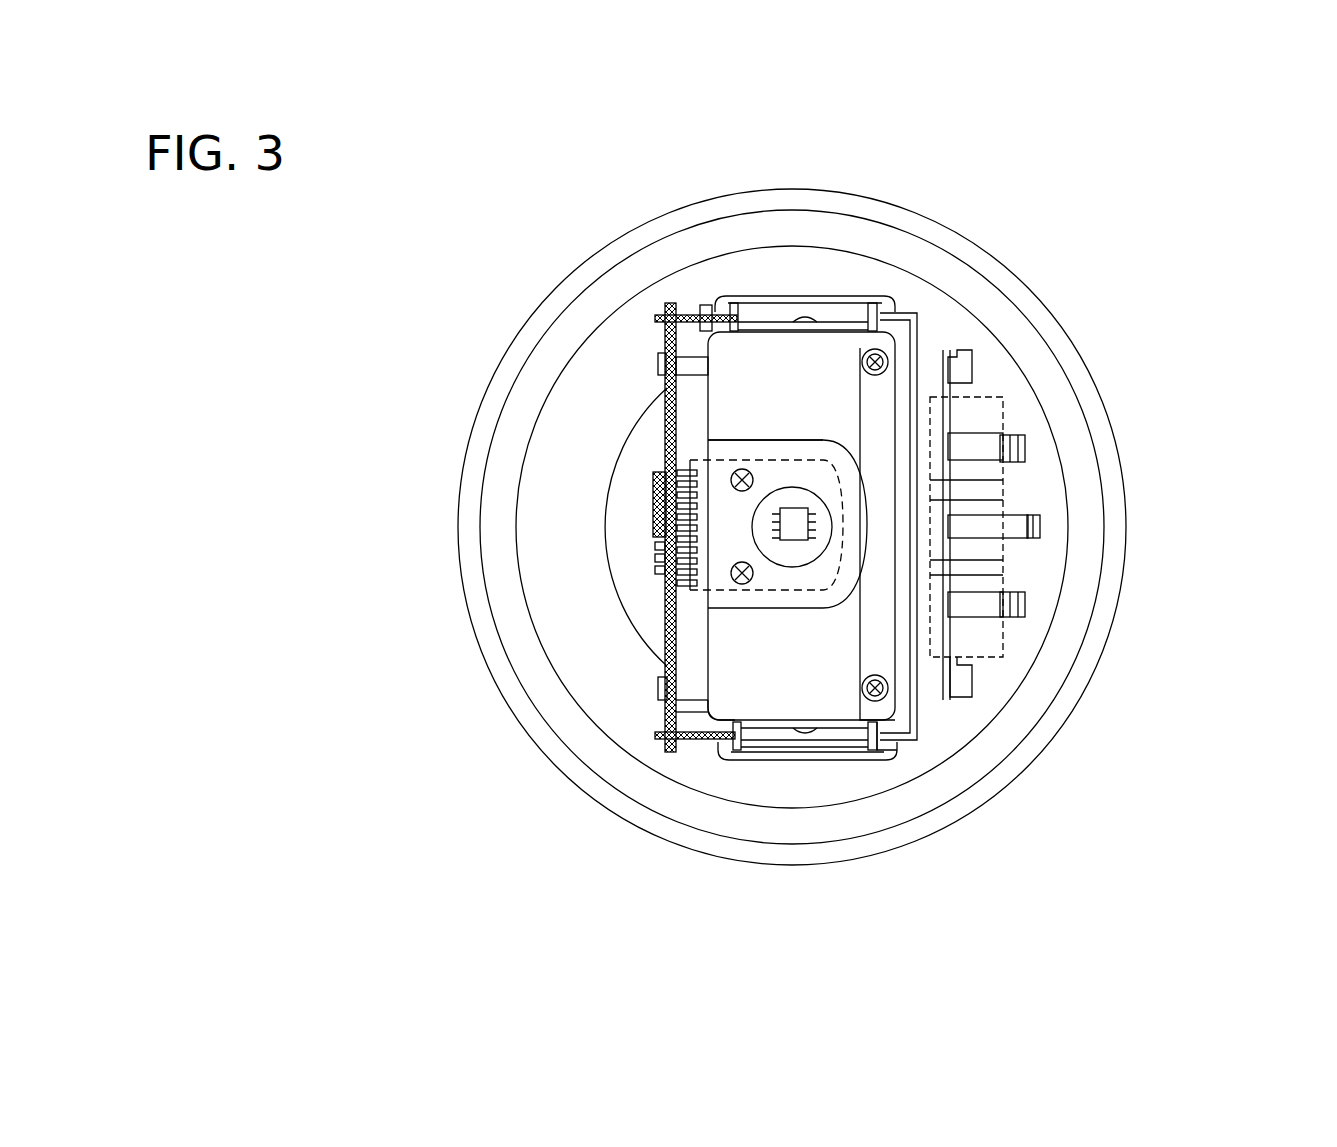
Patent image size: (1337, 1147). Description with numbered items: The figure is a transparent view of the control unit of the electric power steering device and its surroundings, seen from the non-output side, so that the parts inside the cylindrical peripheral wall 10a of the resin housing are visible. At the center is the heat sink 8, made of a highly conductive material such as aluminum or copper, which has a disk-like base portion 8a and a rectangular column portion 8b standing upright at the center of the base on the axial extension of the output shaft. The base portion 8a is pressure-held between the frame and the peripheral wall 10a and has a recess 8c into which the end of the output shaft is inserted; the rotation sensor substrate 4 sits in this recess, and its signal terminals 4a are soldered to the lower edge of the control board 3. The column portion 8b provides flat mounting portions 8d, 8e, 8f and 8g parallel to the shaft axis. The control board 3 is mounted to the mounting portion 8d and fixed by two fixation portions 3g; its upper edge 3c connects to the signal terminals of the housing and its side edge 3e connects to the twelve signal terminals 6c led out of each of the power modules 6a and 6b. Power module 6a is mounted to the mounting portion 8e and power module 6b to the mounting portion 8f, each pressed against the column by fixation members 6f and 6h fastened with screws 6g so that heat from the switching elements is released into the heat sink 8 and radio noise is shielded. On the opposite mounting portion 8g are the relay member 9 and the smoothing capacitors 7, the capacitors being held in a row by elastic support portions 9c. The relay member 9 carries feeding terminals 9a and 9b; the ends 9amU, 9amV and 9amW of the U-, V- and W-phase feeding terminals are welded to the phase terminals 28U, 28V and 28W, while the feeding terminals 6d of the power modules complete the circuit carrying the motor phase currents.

The control board 3 is at (667, 448).
The upper edge 3c is at (667, 428).
The side edge 3e is at (660, 737).
The fixation portions 3g is at (712, 737).
The rotation sensor substrate 4 is at (667, 612).
The signal terminals 4a is at (662, 556).
The power module 6a is at (913, 750).
The power module 6b is at (882, 300).
The signal terminals 6c is at (707, 720).
The feeding terminals 6d is at (895, 742).
The fixation member 6f is at (763, 757).
The screws 6g is at (882, 757).
The fixation member 6h is at (807, 290).
The smoothing capacitors 7 is at (985, 705).
The heat sink 8 is at (418, 281).
The base portion 8a is at (579, 375).
The column portion 8b is at (660, 322).
The recess 8c is at (710, 315).
The mounting portion 8d is at (660, 688).
The mounting portion 8e is at (690, 740).
The mounting portion 8f is at (762, 438).
The mounting portion 8g is at (912, 722).
The relay member 9 is at (953, 348).
The feeding terminals 9a is at (955, 712).
The feeding terminals 9b is at (960, 357).
The support portions 9c is at (1003, 550).
The one end of W-phase feeding terminal 9amW is at (1013, 433).
The one end of V-phase feeding terminal 9amV is at (1034, 515).
The one end of U-phase feeding terminal 9amU is at (1017, 594).
The phase terminal 28W is at (1028, 447).
The phase terminal 28V is at (1042, 527).
The phase terminal 28U is at (1028, 606).
The peripheral wall 10a is at (942, 224).